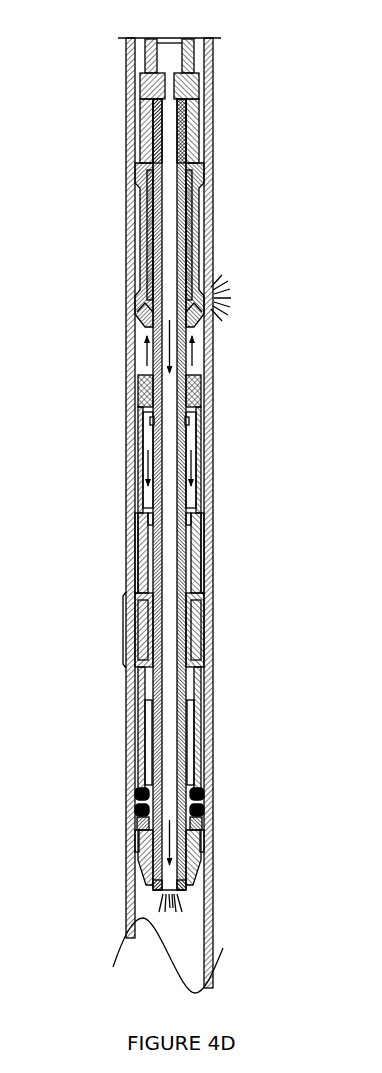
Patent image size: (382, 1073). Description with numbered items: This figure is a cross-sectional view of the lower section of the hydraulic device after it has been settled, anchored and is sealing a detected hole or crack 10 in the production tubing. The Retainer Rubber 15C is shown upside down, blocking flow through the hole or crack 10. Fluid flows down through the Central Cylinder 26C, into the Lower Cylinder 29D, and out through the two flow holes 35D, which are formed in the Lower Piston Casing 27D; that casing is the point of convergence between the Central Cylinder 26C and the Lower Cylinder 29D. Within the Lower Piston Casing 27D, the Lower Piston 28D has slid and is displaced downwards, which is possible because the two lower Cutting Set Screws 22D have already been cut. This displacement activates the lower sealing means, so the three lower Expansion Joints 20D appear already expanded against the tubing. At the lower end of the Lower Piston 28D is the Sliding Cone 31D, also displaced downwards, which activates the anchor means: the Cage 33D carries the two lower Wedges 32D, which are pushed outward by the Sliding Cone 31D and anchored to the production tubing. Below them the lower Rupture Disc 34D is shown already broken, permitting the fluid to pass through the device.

The hole or crack 10 is at (214, 298).
The Retainer Rubber 15C is at (133, 324).
The lower Expansion Joints 20D is at (123, 632).
The lower Cutting Set Screws 22D is at (196, 495).
The Central Cylinder 26C is at (186, 133).
The Lower Piston Casing 27D is at (201, 385).
The Lower Piston 28D is at (199, 548).
The Lower Cylinder 29D is at (191, 674).
The Sliding Cone 31D is at (204, 842).
The Wedges 32D is at (204, 795).
The Cage 33D is at (135, 843).
The lower Rupture Disc 34D is at (186, 892).
The flow holes 35D is at (189, 421).